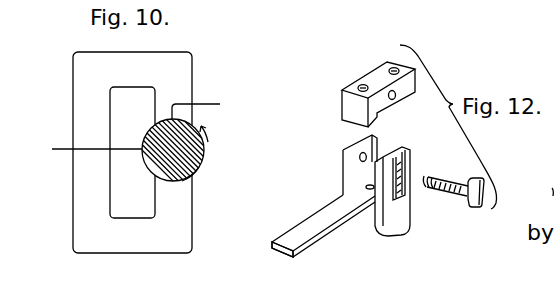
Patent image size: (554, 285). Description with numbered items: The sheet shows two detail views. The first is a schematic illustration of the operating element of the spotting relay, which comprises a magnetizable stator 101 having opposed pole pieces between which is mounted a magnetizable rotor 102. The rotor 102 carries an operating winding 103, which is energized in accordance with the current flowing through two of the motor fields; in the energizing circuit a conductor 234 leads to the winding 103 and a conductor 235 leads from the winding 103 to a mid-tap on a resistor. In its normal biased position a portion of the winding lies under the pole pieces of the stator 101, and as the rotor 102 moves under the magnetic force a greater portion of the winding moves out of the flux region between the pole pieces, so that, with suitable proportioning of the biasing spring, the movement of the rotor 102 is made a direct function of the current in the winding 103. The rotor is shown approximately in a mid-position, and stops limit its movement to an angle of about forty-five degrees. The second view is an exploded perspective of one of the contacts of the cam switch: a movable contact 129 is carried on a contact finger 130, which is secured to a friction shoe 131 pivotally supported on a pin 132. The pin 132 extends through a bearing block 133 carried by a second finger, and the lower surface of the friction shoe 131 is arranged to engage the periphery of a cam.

In FIG. 10, the magnetizable stator 101 is at (95, 57).
In FIG. 10, the magnetizable rotor 102 is at (203, 144).
In FIG. 10, the operating winding 103 is at (200, 167).
In FIG. 10, the conductor 234 is at (58, 148).
In FIG. 10, the conductor 235 is at (210, 103).
In FIG. 12, the movable contact 129 is at (271, 252).
In FIG. 12, the contact finger 130 is at (313, 221).
In FIG. 12, the friction shoe 131 is at (403, 214).
In FIG. 12, the pin 132 is at (452, 181).
In FIG. 12, the bearing block 133 is at (352, 90).